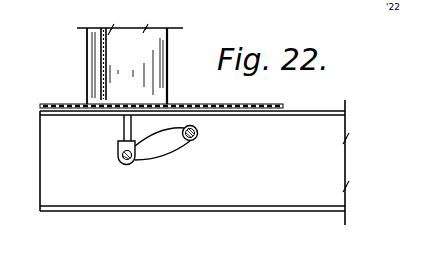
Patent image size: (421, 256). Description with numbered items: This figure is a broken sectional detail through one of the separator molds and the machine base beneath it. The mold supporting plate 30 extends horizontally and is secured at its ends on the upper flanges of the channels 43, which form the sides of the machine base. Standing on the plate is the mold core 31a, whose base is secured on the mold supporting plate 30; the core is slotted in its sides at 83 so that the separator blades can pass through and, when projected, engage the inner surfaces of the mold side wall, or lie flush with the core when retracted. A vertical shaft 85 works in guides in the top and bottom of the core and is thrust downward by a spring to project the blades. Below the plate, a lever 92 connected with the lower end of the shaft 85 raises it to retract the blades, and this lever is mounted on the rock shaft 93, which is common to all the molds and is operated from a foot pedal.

The slot 83 is at (108, 28).
The core 31a is at (86, 46).
The mold supporting plate 30 is at (58, 105).
The vertical shaft 85 is at (123, 131).
The rock shaft 93 is at (198, 134).
The lever 92 is at (166, 152).
The channel 43 is at (218, 202).